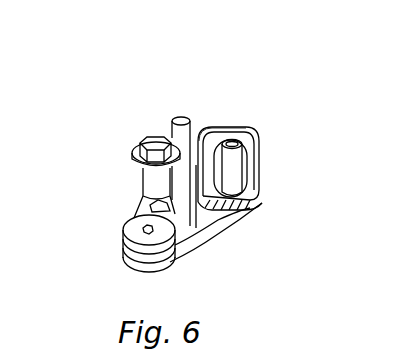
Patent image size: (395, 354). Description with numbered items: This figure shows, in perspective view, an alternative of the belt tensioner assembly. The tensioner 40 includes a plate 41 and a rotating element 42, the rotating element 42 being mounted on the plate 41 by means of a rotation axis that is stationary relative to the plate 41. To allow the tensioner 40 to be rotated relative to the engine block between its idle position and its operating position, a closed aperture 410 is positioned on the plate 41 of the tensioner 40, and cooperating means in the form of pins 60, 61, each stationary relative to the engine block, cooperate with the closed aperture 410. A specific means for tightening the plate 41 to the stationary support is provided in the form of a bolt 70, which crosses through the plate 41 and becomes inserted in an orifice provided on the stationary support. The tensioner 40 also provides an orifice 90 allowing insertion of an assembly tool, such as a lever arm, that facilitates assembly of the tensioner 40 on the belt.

The tensioner 40 is at (260, 193).
The plate 41 is at (214, 140).
The closed aperture 410 is at (198, 232).
The rotating element 42 is at (122, 262).
The pin 60 is at (178, 118).
The pin 61 is at (241, 170).
The bolt 70 is at (140, 148).
The orifice 90 is at (236, 138).